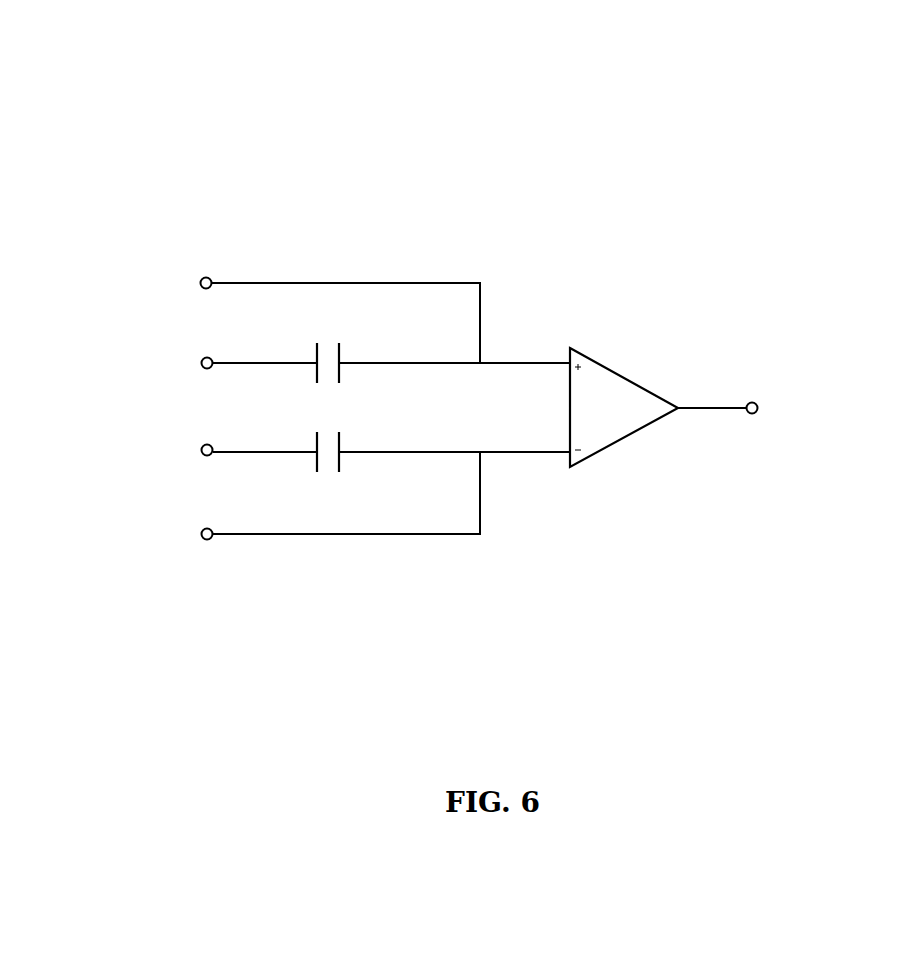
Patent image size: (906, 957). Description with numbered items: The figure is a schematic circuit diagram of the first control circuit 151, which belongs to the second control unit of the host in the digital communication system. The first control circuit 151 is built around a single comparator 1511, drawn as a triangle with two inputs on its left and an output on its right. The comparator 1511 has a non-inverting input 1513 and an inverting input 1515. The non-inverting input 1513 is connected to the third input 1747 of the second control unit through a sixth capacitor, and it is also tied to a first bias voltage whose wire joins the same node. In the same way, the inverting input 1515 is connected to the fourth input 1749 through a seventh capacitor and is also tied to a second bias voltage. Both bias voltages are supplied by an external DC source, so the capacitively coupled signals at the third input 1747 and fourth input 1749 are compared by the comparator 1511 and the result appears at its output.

The first control circuit 151 is at (373, 113).
The comparator 1511 is at (618, 371).
The non-inverting input 1513 is at (545, 364).
The inverting input 1515 is at (544, 452).
The third input 1747 is at (203, 359).
The fourth input 1749 is at (203, 446).